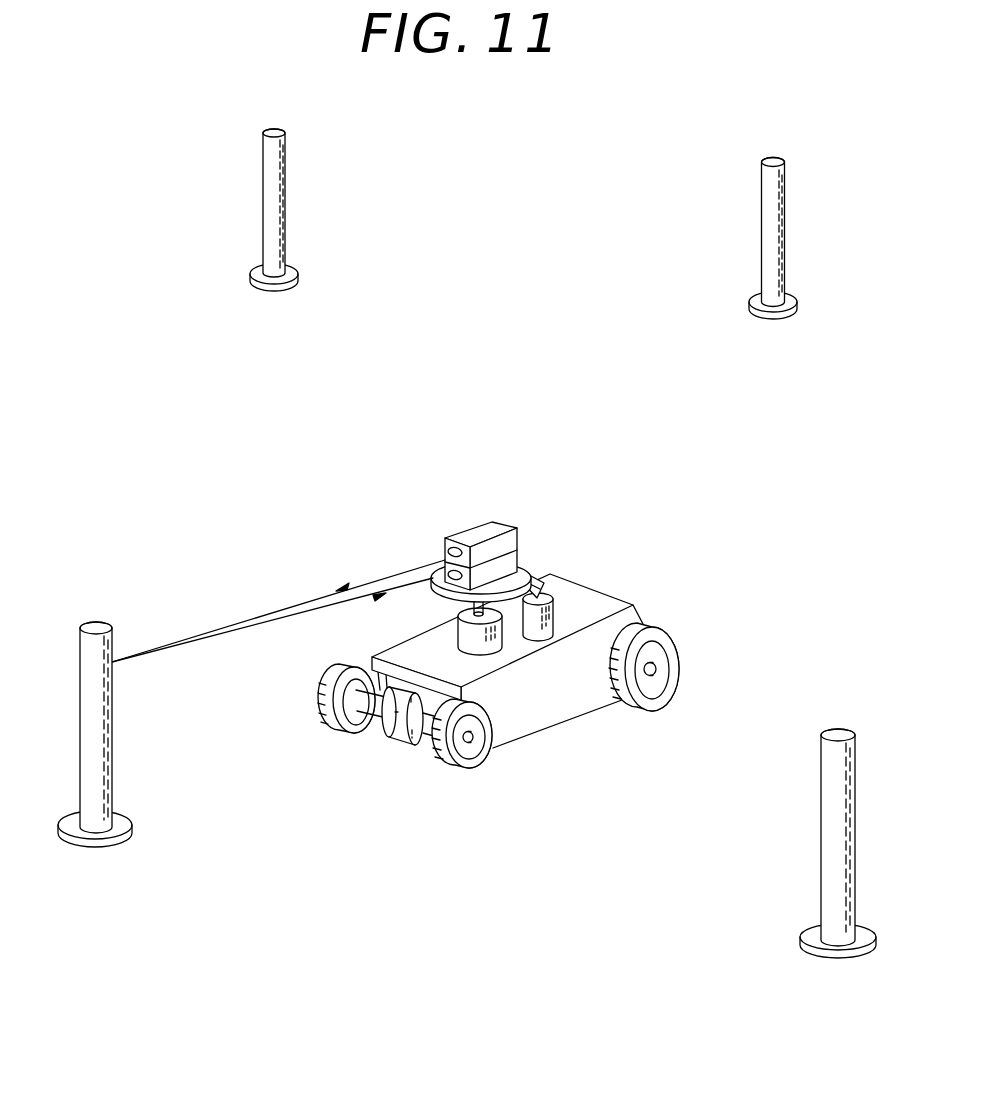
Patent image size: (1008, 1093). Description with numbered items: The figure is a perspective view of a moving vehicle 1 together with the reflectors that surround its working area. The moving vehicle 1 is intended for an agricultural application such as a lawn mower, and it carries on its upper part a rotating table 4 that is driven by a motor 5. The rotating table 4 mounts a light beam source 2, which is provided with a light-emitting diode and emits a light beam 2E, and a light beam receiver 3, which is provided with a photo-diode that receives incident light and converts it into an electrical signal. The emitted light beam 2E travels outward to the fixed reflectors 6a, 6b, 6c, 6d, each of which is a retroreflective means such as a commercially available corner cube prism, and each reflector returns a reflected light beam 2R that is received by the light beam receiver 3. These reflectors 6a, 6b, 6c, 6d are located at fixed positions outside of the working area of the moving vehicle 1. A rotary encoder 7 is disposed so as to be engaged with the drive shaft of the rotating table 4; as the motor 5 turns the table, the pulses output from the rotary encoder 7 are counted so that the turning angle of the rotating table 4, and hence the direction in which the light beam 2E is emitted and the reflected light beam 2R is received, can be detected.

The moving vehicle 1 is at (563, 717).
The light beam source 2 is at (472, 530).
The light beam 2E is at (255, 615).
The light beam 2R is at (248, 633).
The light beam receiver 3 is at (510, 563).
The rotating table 4 is at (522, 572).
The motor 5 is at (553, 613).
The reflector 6a is at (285, 172).
The reflector 6b is at (112, 755).
The reflector 6c is at (822, 793).
The reflector 6d is at (785, 247).
The rotary encoder 7 is at (457, 623).